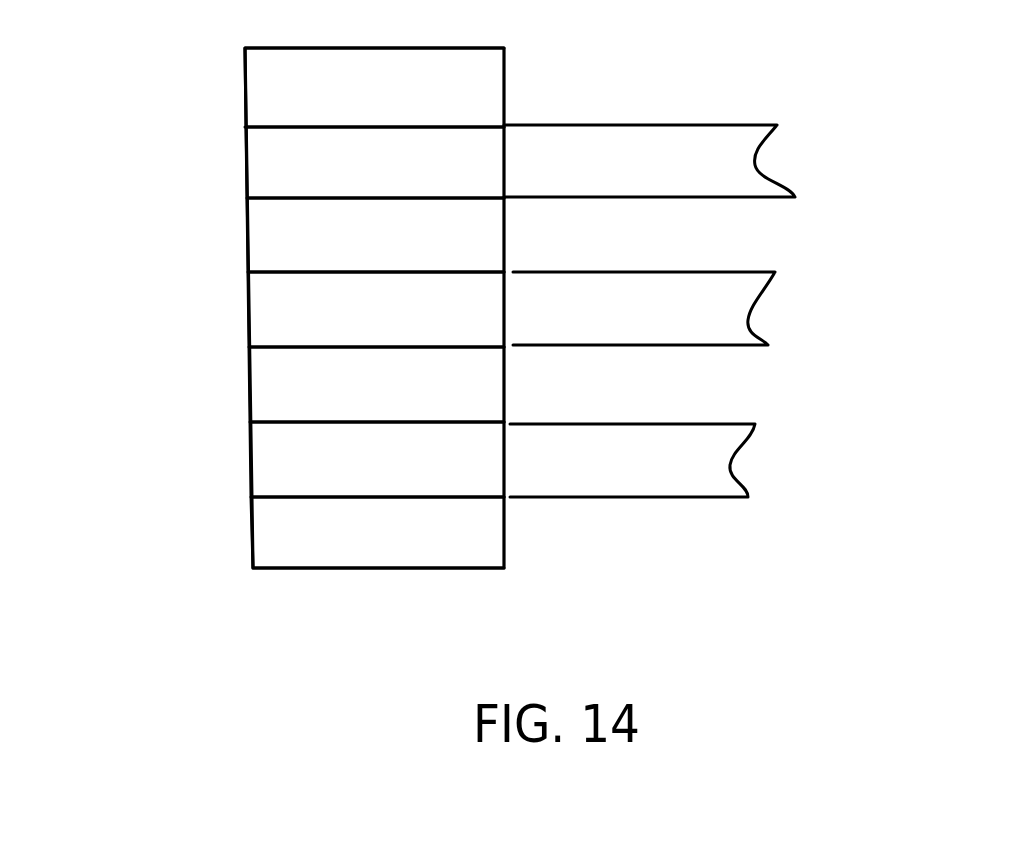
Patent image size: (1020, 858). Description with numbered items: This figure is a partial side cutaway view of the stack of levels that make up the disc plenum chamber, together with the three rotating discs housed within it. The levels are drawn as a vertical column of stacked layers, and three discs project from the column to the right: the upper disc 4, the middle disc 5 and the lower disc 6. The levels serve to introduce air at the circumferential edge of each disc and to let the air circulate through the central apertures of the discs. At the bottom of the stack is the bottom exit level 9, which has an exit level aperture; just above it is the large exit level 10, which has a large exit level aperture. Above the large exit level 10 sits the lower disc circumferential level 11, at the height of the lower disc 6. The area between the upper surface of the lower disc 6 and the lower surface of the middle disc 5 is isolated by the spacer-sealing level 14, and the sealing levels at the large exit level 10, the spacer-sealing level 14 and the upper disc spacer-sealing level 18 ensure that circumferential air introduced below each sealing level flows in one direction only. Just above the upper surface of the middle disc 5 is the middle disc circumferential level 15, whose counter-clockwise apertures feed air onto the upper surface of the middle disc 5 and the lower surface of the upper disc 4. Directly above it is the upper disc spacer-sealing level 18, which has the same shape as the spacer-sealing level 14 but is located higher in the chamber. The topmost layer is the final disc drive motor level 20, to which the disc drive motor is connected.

The upper disc 4 is at (693, 152).
The middle disc 5 is at (695, 312).
The lower disc 6 is at (632, 475).
The bottom exit level 9 is at (280, 543).
The large exit level 10 is at (277, 465).
The lower disc circumferential level 11 is at (272, 385).
The spacer-sealing level 14 is at (273, 308).
The middle disc circumferential level 15 is at (270, 238).
The upper disc spacer-sealing level 18 is at (273, 162).
The final disc drive motor level 20 is at (270, 85).